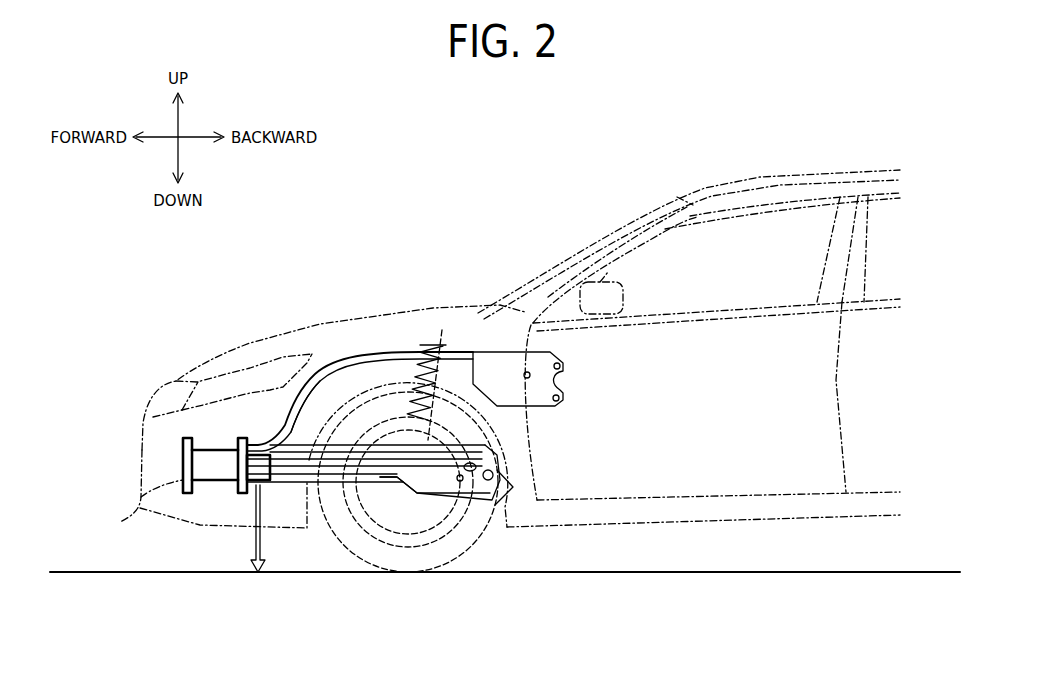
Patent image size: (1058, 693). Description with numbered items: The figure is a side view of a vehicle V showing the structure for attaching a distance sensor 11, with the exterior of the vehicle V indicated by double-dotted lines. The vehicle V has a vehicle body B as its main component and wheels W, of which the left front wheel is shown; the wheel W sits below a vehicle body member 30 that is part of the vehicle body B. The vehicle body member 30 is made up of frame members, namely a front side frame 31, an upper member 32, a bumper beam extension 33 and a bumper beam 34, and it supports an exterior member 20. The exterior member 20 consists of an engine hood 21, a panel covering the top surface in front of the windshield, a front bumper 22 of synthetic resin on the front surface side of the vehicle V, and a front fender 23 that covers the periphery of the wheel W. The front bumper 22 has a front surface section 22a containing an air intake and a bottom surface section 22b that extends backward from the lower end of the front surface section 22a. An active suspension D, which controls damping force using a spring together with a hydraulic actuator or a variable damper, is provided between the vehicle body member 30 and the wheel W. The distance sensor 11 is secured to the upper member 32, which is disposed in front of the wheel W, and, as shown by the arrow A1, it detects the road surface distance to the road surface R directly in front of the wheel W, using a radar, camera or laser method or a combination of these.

The distance sensor 11 is at (243, 470).
The exterior member 20 is at (126, 404).
The engine hood 21 is at (317, 327).
The front bumper 22 is at (140, 438).
The front surface section 22a is at (140, 471).
The bottom surface section 22b is at (240, 528).
The front fender 23 is at (370, 337).
The vehicle body member 30 is at (401, 344).
The front side frame 31 is at (370, 492).
The upper member 32 is at (312, 378).
The bumper beam extension 33 is at (203, 480).
The bumper beam 34 is at (143, 508).
The vehicle V is at (445, 212).
The vehicle body B is at (780, 170).
The active suspension D is at (440, 350).
The wheel W is at (455, 545).
The road surface R is at (918, 570).
The arrow A1 is at (262, 545).